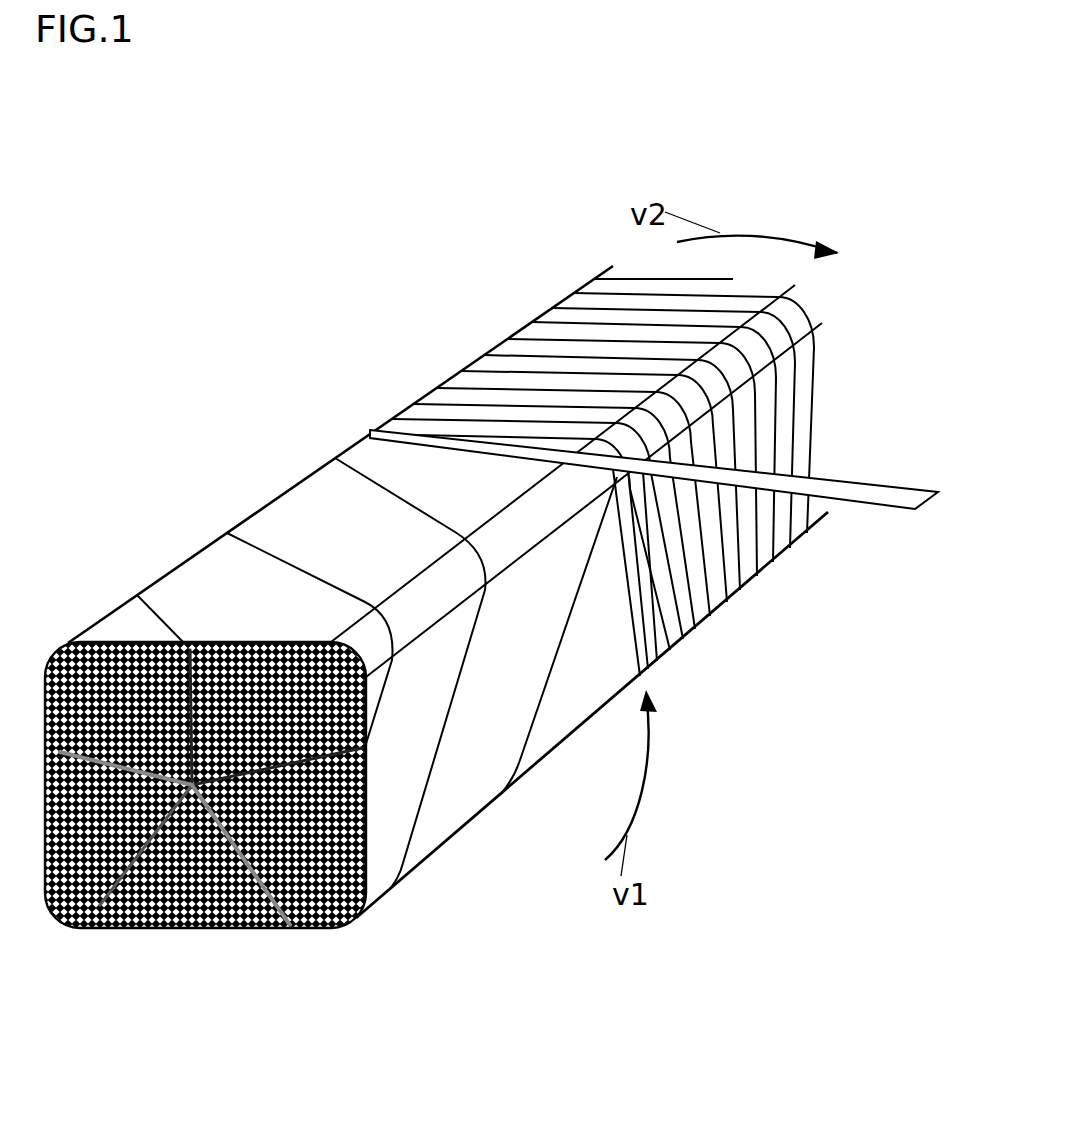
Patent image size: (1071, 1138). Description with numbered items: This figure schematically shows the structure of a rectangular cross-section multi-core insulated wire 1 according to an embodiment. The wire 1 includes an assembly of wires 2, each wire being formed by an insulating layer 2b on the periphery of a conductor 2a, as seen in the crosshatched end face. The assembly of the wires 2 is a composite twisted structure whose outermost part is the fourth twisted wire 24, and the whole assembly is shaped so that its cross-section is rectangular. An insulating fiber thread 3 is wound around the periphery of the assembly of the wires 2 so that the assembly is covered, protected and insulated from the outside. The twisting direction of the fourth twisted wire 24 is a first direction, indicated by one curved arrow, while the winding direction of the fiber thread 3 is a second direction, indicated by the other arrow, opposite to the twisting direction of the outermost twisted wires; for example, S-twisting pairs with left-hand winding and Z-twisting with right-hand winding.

The rectangular cross-section multi-core insulated wire 1 is at (266, 369).
The assembly of wires 2 is at (214, 856).
The conductor 2a is at (315, 928).
The insulating layer 2b is at (323, 928).
The insulating fiber thread 3 is at (545, 337).
The fourth twisted wire 24 is at (478, 782).